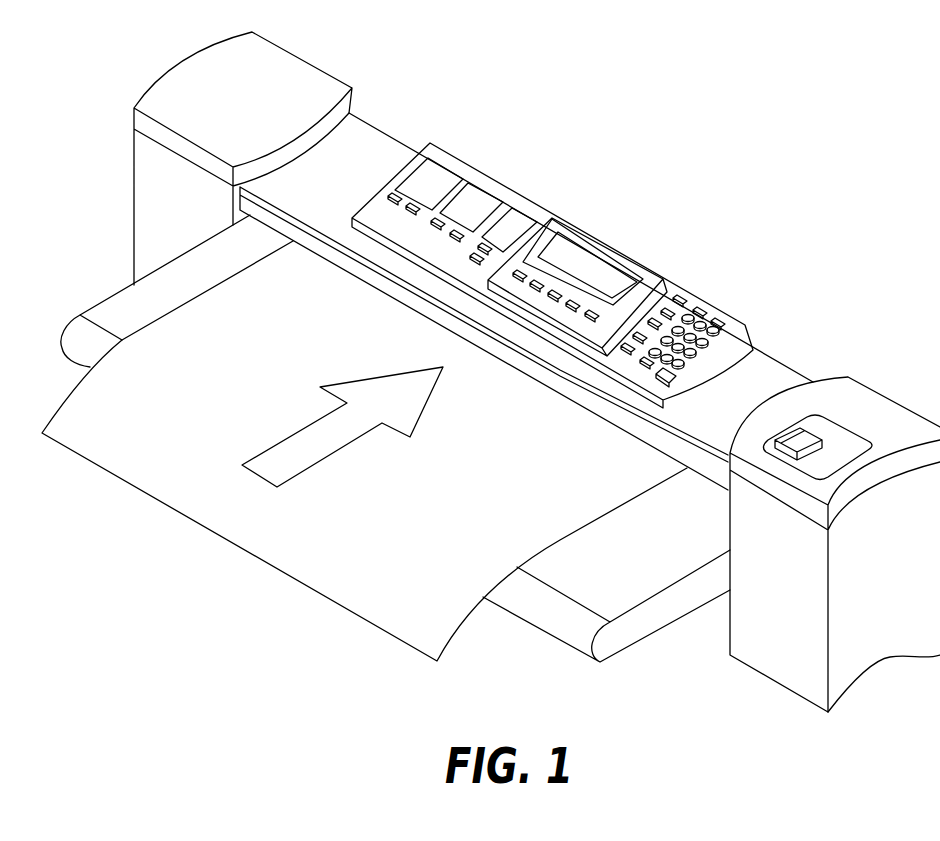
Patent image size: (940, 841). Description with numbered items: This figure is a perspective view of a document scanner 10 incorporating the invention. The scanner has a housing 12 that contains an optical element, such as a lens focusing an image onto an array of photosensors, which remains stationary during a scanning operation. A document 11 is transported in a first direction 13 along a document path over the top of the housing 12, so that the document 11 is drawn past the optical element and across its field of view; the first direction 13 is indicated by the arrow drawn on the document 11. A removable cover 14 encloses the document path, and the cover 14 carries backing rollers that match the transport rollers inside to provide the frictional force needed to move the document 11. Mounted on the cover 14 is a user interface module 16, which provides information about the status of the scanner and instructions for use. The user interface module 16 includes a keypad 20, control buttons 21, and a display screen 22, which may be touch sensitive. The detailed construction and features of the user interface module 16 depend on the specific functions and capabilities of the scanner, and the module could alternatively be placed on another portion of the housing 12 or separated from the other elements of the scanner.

The printer/plotter apparatus 10 is at (800, 326).
The document 11 is at (73, 437).
The housing 12 is at (141, 198).
The first direction 13 is at (337, 438).
The removable cover 14 is at (371, 137).
The user interface module 16 is at (538, 207).
The keypad 20 is at (715, 335).
The function key 21 is at (440, 222).
The display screen 22 is at (583, 258).